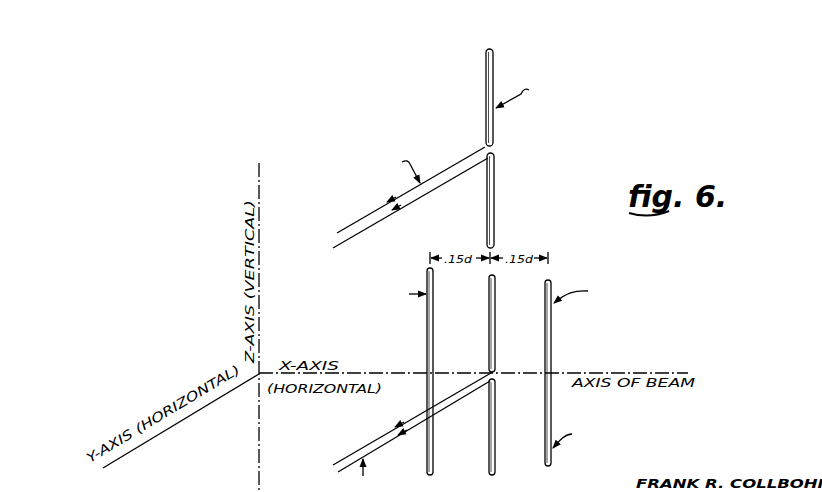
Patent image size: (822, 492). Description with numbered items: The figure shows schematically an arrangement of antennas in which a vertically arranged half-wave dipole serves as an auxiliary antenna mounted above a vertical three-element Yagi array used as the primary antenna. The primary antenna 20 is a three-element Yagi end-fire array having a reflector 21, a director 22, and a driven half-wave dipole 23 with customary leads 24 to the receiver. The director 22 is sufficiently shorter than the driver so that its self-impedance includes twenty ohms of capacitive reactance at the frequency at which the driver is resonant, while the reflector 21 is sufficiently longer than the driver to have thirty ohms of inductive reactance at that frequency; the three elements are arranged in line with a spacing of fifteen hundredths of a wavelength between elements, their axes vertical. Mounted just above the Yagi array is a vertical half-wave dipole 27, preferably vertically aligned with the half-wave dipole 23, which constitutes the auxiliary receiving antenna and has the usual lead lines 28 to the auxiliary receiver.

The primary antenna 20 is at (470, 331).
The reflector 21 is at (427, 327).
The director 22 is at (552, 341).
The half-wave dipole 23 is at (497, 440).
The leads 24 is at (372, 440).
The vertical half-wave dipole 27 is at (495, 209).
The lead lines 28 is at (421, 197).